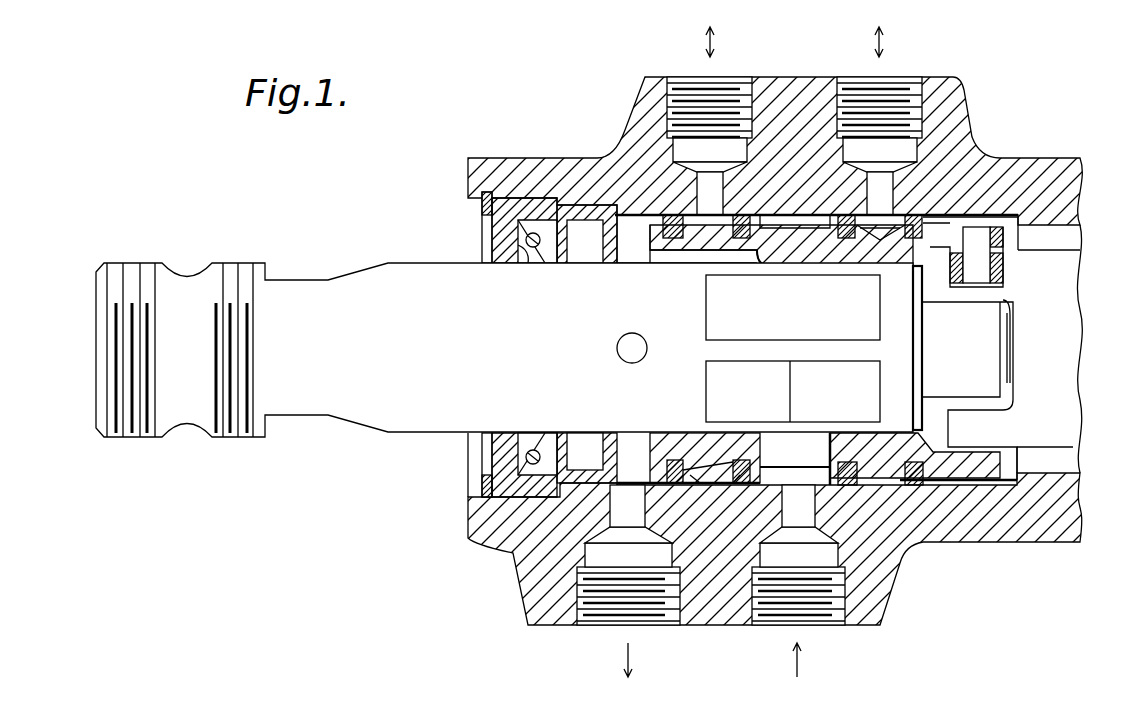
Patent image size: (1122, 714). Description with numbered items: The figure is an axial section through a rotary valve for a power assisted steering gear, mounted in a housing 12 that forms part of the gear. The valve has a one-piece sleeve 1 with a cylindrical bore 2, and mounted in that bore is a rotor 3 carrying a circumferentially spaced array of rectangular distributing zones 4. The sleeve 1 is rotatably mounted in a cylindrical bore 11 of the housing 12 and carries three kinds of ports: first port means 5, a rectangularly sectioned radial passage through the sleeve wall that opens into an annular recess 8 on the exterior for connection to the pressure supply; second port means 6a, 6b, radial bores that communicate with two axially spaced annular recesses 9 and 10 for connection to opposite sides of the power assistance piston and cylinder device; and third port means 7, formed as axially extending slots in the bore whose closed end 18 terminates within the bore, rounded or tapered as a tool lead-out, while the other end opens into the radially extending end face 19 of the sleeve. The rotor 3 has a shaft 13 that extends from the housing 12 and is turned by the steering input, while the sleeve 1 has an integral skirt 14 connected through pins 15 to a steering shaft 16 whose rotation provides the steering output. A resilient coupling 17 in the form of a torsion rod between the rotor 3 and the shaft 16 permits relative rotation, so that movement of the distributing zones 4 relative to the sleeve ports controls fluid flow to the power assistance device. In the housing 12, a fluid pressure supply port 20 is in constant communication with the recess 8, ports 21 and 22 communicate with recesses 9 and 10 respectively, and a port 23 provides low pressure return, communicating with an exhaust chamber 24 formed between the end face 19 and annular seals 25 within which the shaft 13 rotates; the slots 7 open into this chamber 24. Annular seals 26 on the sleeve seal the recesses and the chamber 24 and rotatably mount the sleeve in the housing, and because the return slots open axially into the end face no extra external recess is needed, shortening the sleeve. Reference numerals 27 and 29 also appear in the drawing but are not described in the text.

The sleeve 1 is at (662, 433).
The cylindrical bore 2 is at (690, 433).
The rotor 3 is at (897, 390).
The distributing zones 4 is at (767, 340).
The first port means 5 is at (801, 460).
The second port means 6a is at (723, 453).
The second port means 6b is at (863, 250).
The third port means 7 is at (688, 262).
The annular recess 8 is at (800, 222).
The annular recess 9 is at (702, 233).
The annular recess 10 is at (873, 222).
The cylindrical bore 11 is at (633, 222).
The housing 12 is at (643, 117).
The shaft 13 is at (497, 361).
The integral skirt 14 is at (962, 470).
The pins 15 is at (980, 252).
The steering shaft 16 is at (1078, 468).
The resilient coupling 17 is at (1007, 347).
The closed end 18 is at (757, 265).
The end face 19 is at (648, 240).
The fluid pressure supply port 20 is at (773, 613).
The port 21 is at (690, 83).
The port 22 is at (870, 87).
The port 23 is at (602, 613).
The exhaust chamber 24 is at (628, 470).
The annular seals 25 is at (502, 230).
The annular seals 26 is at (665, 217).
The circlip 27 is at (928, 250).
The control slot 29 is at (790, 422).